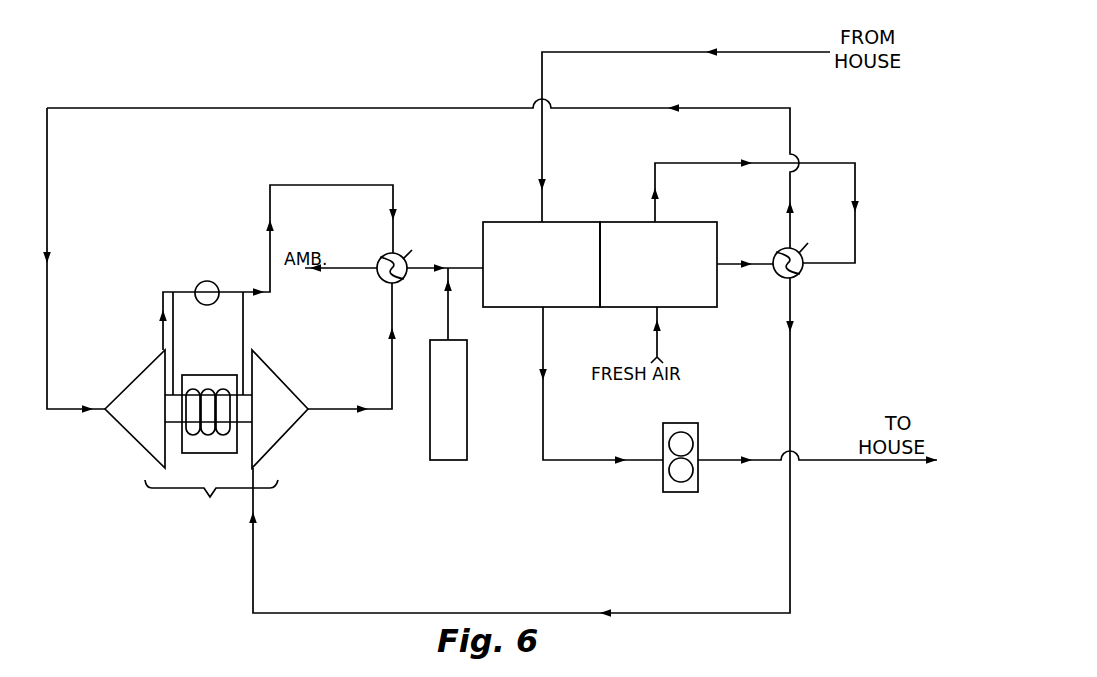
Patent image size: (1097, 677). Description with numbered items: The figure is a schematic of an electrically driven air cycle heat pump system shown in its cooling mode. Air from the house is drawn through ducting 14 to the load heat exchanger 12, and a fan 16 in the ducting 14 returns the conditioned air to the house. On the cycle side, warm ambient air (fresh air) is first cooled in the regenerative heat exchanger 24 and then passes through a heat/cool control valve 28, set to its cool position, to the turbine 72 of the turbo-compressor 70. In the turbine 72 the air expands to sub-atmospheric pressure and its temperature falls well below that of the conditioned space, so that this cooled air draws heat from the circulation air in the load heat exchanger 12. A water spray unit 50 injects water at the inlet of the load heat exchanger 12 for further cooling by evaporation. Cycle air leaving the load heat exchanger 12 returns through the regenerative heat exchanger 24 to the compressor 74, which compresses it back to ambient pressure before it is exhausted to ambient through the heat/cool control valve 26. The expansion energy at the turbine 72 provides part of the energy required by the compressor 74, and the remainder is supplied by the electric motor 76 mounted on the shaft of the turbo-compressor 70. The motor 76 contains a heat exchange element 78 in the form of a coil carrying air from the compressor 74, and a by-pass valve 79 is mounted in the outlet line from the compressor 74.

The load heat exchanger 12 is at (561, 222).
The ducting 14 is at (542, 158).
The fan 16 is at (698, 436).
The regenerative heat exchanger 24 is at (690, 222).
The heat/cool control valve 26 is at (381, 280).
The heat/cool control valve 28 is at (798, 277).
The spray unit 50 is at (467, 372).
The turbo-compressor 70 is at (211, 503).
The turbine 72 is at (281, 376).
The compressor 74 is at (128, 442).
The electric motor 76 is at (226, 453).
The heat exchange element 78 is at (209, 390).
The by-pass valve 79 is at (215, 272).